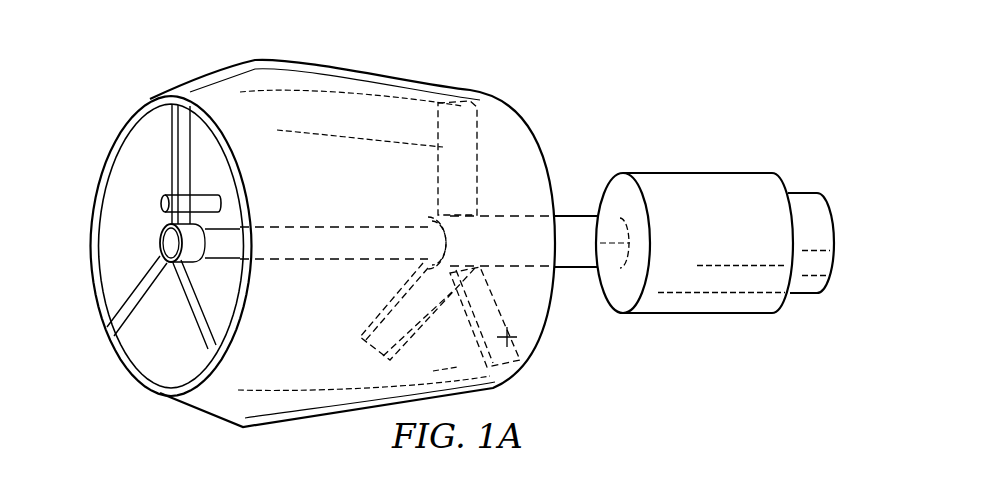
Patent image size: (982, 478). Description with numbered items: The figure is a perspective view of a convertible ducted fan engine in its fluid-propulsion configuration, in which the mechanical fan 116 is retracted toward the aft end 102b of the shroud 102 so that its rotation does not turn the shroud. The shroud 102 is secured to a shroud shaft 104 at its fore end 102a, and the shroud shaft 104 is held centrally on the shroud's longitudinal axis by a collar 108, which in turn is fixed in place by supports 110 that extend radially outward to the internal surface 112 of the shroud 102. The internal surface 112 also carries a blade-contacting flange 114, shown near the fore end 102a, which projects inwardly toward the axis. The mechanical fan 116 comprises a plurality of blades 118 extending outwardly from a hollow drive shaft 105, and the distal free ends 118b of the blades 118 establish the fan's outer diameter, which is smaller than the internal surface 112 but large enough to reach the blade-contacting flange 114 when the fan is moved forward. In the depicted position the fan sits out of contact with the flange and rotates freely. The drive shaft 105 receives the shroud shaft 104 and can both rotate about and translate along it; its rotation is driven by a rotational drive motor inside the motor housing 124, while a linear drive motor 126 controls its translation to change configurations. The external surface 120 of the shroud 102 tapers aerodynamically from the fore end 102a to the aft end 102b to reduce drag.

The shroud 102 is at (383, 60).
The fore end 102a is at (153, 103).
The aft end 102b is at (518, 113).
The shroud shaft 104 is at (318, 258).
The drive shaft 105 is at (580, 272).
The collar 108 is at (178, 239).
The supports 110 is at (199, 336).
The internal surface 112 is at (143, 337).
The blade-contacting flange 114 is at (160, 203).
The mechanical fan 116 is at (398, 191).
The blades 118 is at (440, 182).
The distal free ends 118b is at (460, 100).
The external surface 120 is at (290, 181).
The motor housing 124 is at (716, 173).
The linear drive motor 126 is at (808, 205).